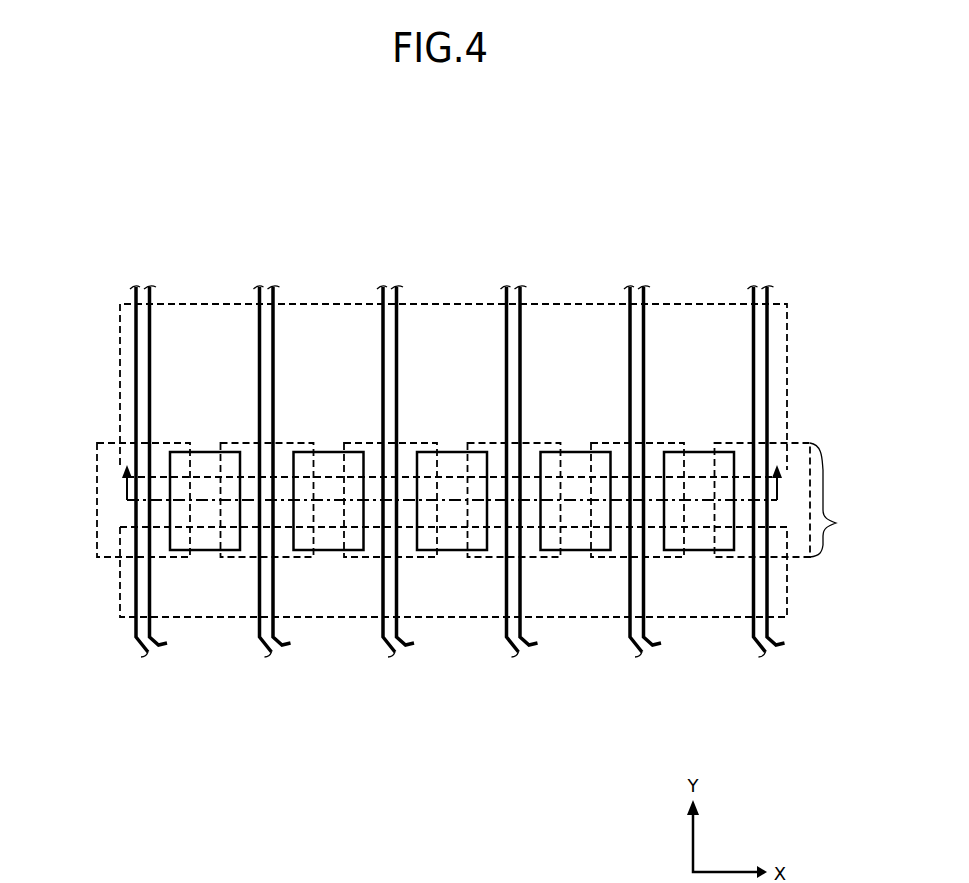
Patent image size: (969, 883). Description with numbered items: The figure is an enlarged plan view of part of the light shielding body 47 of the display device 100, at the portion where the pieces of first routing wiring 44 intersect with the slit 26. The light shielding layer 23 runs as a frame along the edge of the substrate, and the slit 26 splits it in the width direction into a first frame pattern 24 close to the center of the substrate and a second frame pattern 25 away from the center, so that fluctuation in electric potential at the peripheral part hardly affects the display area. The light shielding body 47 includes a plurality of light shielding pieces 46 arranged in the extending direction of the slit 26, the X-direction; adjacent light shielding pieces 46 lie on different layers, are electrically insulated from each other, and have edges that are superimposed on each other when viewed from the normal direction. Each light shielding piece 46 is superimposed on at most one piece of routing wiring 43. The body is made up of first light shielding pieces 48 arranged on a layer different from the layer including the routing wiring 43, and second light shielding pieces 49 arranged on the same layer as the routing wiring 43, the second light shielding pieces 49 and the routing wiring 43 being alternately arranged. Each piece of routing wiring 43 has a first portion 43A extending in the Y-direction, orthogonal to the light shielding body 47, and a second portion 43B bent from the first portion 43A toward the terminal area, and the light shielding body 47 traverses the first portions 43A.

The display device 100 is at (706, 175).
The first routing wiring 44 is at (762, 285).
The routing wiring 43 is at (412, 438).
The first portion 43A is at (145, 325).
The second portion 43B is at (146, 650).
The light shielding layer 23 is at (413, 460).
The first frame pattern 24 is at (132, 360).
The second frame pattern 25 is at (132, 587).
The slit 26 is at (121, 514).
The light shielding piece 46 is at (453, 584).
The first light shielding piece 48 is at (666, 677).
The second light shielding piece 49 is at (717, 677).
The light shielding body 47 is at (836, 526).